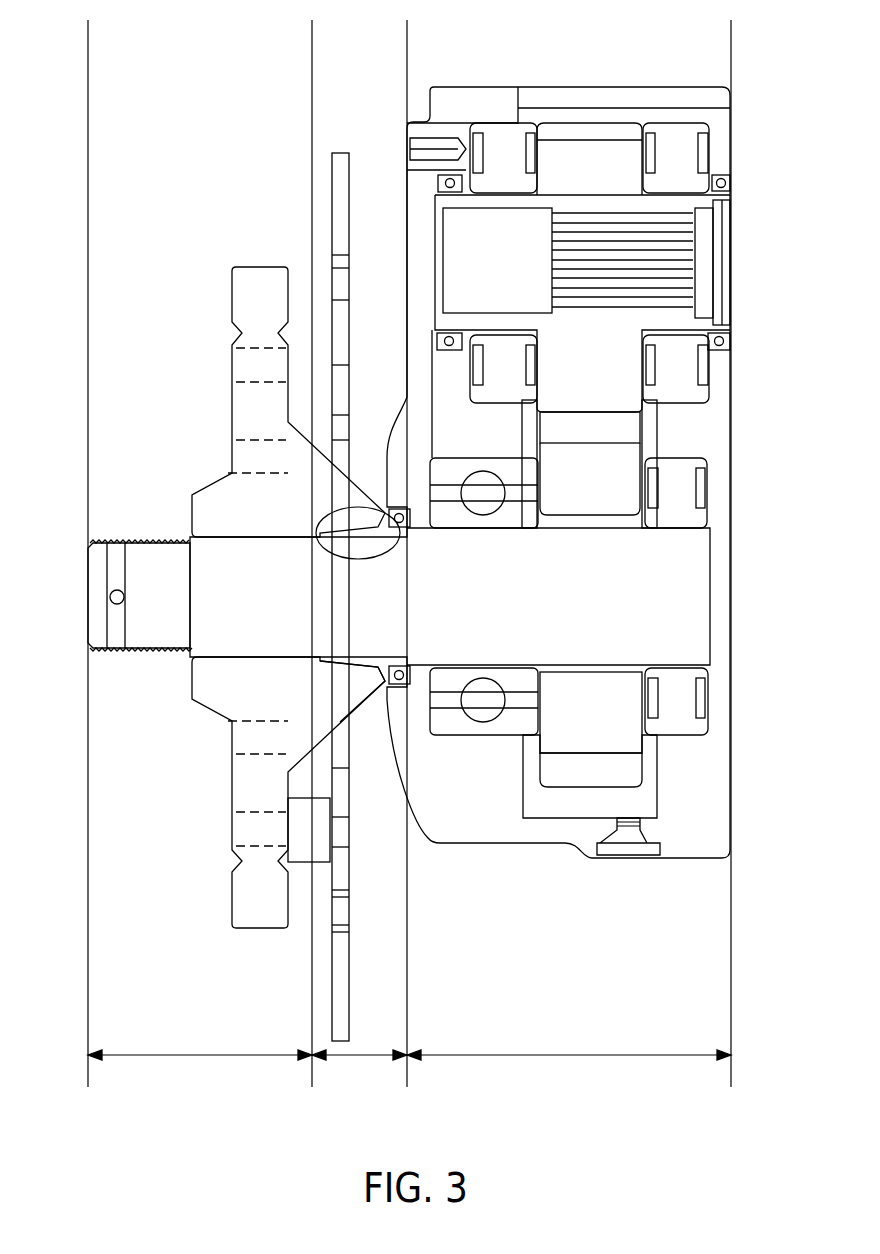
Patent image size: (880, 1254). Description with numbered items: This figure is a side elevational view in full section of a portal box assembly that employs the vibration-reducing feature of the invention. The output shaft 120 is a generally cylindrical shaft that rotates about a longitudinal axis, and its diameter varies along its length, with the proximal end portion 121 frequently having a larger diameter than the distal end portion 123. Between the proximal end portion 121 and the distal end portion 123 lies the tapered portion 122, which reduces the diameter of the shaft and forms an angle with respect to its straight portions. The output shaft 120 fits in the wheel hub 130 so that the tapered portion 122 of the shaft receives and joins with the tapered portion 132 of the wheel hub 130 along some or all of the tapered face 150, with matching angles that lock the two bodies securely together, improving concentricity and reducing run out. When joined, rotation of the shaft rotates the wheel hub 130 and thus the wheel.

The output shaft 120 is at (233, 607).
The proximal end portion 121 is at (575, 1058).
The tapered portion 122 is at (360, 1058).
The distal end portion 123 is at (195, 1058).
The wheel hub 130 is at (262, 283).
The tapered portion 132 is at (355, 670).
The tapered face 150 is at (358, 507).